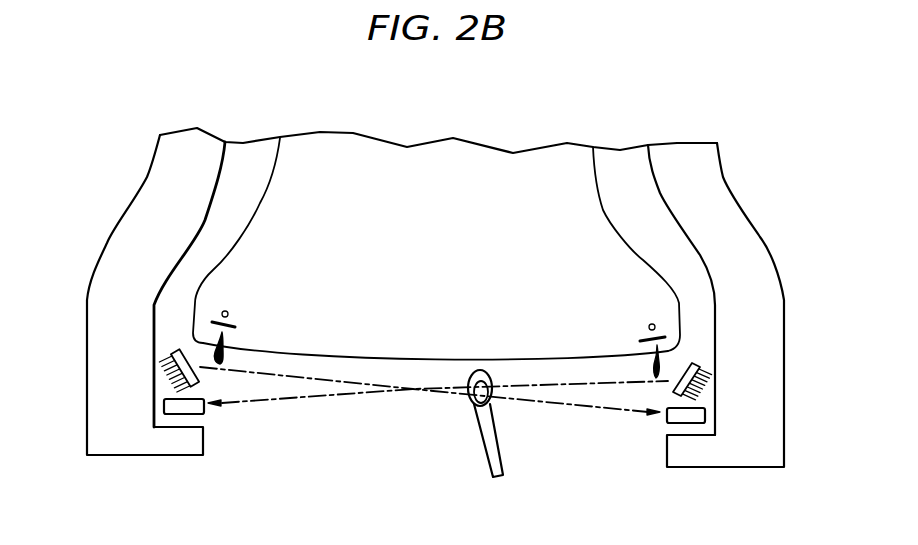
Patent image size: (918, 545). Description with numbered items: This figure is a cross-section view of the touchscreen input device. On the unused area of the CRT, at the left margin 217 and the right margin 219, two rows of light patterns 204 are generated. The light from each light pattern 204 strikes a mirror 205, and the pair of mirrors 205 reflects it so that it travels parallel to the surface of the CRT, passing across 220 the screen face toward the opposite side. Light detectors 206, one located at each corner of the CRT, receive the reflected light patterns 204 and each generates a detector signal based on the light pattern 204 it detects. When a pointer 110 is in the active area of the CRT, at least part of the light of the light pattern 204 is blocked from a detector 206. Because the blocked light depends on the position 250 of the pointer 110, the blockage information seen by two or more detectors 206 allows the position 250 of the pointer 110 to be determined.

The pointer 110 is at (503, 453).
The light pattern 204 is at (228, 312).
The mirror 205 is at (176, 352).
The light detector 206 is at (178, 414).
The left margin 217 is at (217, 267).
The right margin 219 is at (679, 300).
The reflection path across the screen face 220 is at (390, 388).
The position of the pointer 250 is at (474, 405).